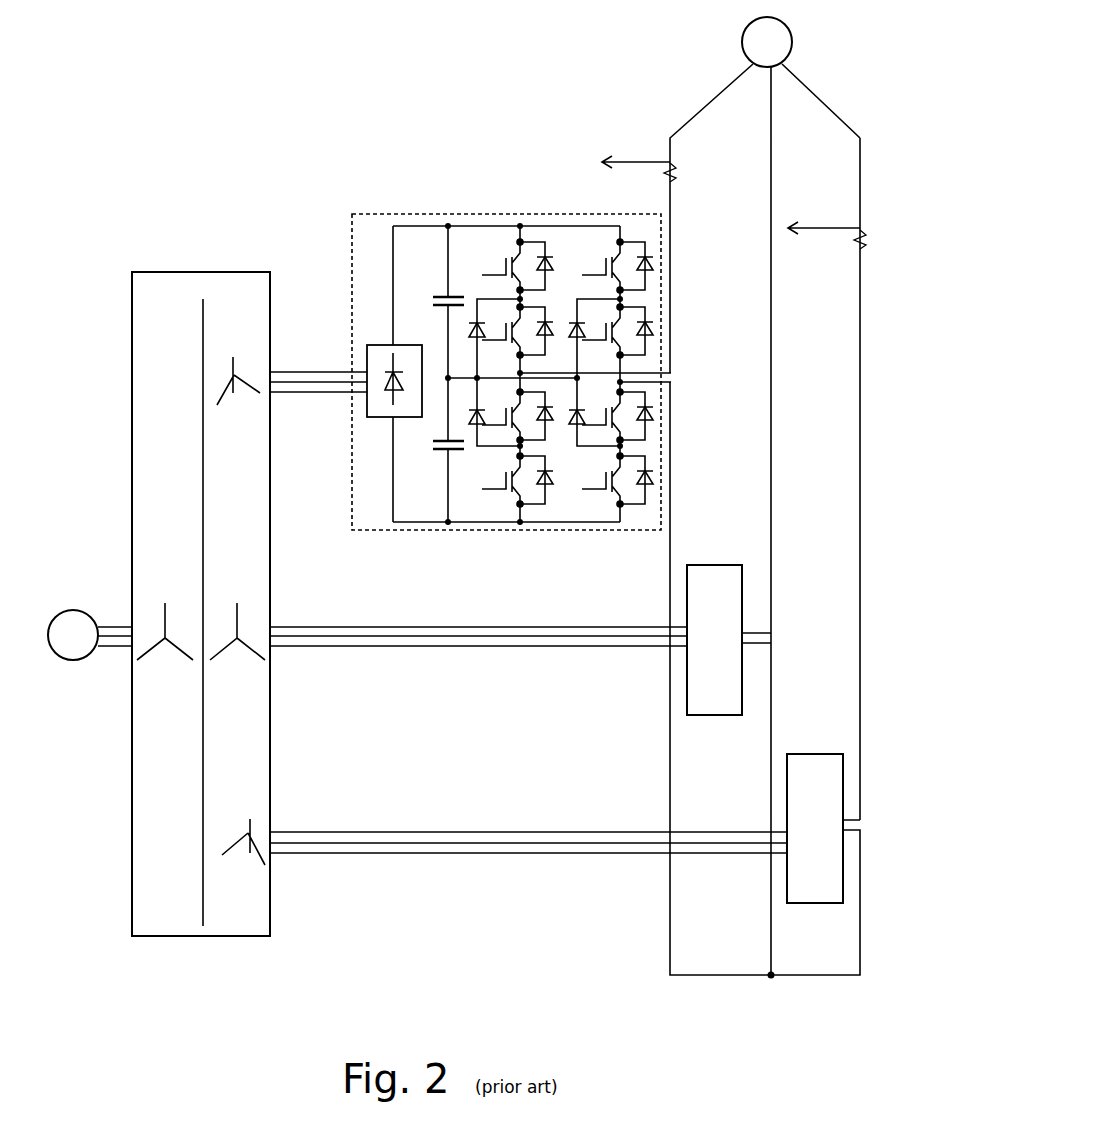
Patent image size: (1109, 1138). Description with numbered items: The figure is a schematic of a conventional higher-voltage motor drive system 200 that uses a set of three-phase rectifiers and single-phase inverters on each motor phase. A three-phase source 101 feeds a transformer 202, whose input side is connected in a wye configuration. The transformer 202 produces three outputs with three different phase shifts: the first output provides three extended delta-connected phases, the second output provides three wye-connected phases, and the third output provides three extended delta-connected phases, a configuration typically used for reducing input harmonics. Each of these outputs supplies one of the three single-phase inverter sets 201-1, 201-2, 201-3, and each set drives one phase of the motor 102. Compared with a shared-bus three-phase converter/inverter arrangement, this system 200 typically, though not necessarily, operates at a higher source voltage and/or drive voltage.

The motor drive system 200 is at (271, 60).
The source 101 is at (74, 610).
The motor 102 is at (745, 33).
The transformer 202 is at (180, 272).
The single-phase inverter 201-1 is at (386, 214).
The single-phase inverter 201-2 is at (720, 565).
The single-phase inverter 201-3 is at (820, 754).